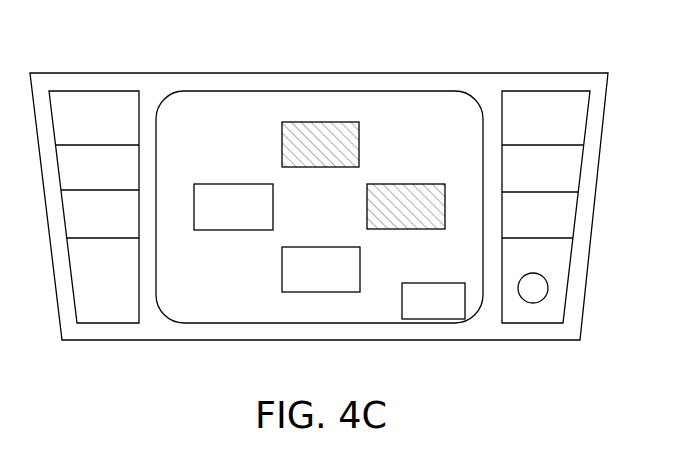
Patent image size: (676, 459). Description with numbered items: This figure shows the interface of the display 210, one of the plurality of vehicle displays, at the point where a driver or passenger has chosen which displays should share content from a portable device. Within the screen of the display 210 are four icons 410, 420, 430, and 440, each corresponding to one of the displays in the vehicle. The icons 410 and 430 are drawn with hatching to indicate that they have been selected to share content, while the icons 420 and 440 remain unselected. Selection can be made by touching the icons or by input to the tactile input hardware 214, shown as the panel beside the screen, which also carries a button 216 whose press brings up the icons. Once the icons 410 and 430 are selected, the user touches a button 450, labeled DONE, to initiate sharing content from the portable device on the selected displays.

The display 210 is at (290, 91).
The tactile input hardware 214 is at (550, 91).
The button 216 is at (533, 303).
The icon 410 is at (282, 147).
The icon 420 is at (232, 230).
The icon 430 is at (407, 184).
The icon 440 is at (360, 275).
The button 450 is at (428, 322).